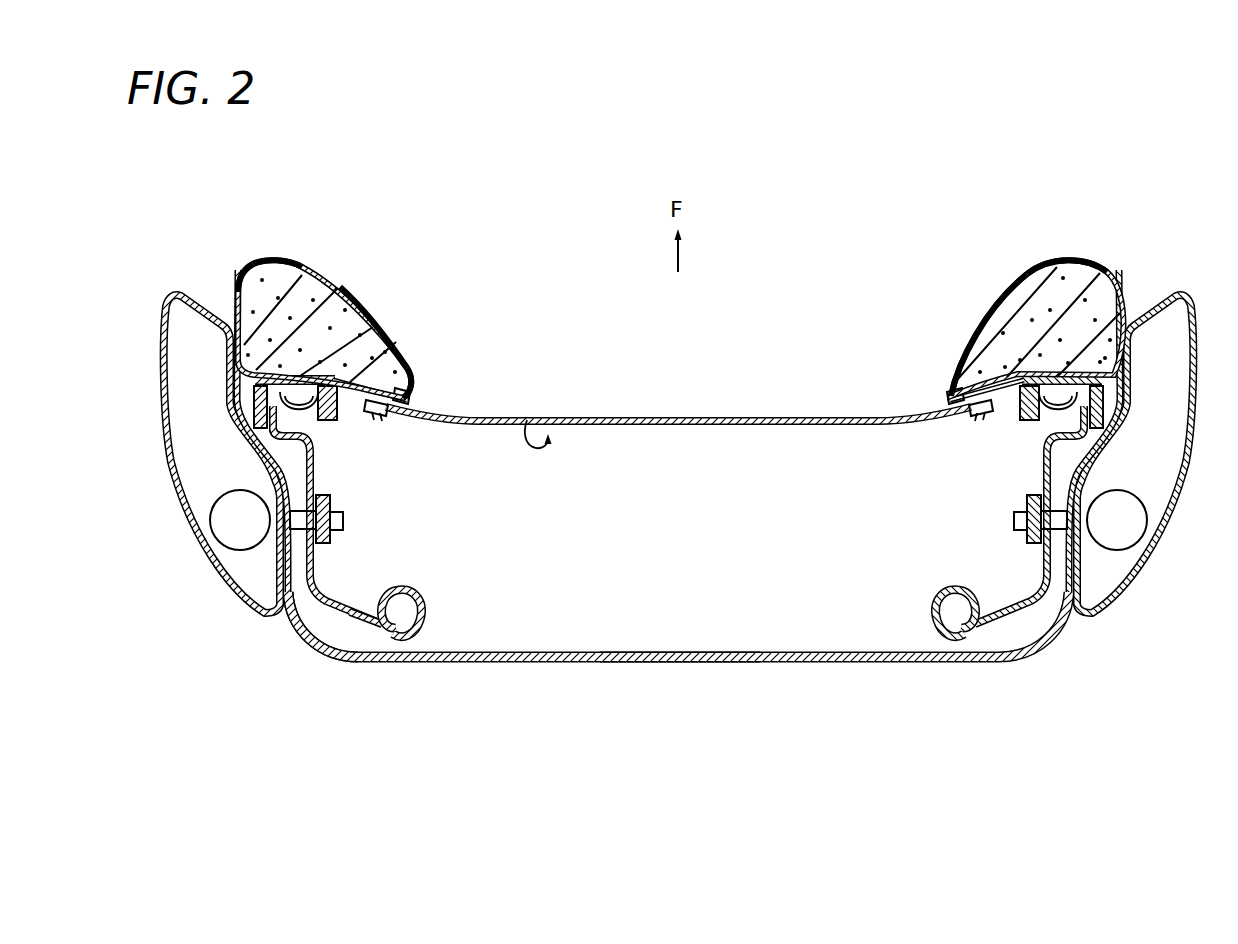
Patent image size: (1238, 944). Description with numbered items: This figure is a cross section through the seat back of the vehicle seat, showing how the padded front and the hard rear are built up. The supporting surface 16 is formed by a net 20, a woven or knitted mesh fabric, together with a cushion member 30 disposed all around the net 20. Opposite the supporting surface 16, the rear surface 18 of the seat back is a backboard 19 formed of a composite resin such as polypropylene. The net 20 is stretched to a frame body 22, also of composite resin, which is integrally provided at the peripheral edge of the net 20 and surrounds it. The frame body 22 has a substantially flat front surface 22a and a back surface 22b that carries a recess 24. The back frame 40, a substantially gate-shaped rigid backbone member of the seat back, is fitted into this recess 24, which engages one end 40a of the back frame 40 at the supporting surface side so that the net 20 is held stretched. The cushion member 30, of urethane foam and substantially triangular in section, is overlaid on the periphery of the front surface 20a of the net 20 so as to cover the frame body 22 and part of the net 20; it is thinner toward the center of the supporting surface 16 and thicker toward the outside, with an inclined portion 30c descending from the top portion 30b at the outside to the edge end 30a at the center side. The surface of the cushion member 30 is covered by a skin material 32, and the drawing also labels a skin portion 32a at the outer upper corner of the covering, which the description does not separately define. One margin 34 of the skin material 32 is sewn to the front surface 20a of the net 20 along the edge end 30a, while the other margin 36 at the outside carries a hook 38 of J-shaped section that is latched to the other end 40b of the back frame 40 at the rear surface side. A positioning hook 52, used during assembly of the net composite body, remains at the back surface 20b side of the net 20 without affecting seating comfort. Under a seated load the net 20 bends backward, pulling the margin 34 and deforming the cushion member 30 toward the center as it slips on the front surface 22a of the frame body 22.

The supporting surface 16 is at (672, 414).
The rear surface 18 is at (625, 668).
The backboard 19 is at (686, 662).
The net 20 is at (766, 418).
The front surface of the net 20a is at (584, 414).
The back surface of the net 20b is at (527, 420).
The frame body 22 is at (240, 450).
The front surface of the frame body 22a is at (312, 362).
The back surface of the frame body 22b is at (277, 437).
The recess 24 is at (262, 403).
The cushion member 30 is at (680, 304).
The edge end of the cushion member 30a is at (409, 396).
The top portion of the cushion member 30b is at (275, 254).
The inclined portion 30c is at (386, 320).
The skin material 32 is at (318, 272).
The skin upper corner 32a is at (253, 264).
The one margin of the skin material 34 is at (400, 375).
The other margin of the skin material 36 is at (325, 648).
The hook 38 is at (418, 598).
The back frame 40 is at (300, 592).
The one end of the back frame 40a is at (297, 406).
The other end of the back frame 40b is at (382, 636).
The positioning hook 52 is at (376, 418).